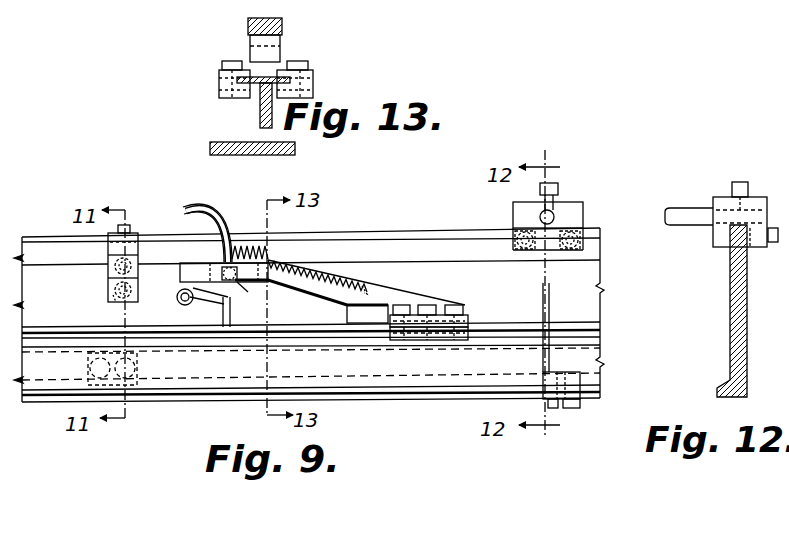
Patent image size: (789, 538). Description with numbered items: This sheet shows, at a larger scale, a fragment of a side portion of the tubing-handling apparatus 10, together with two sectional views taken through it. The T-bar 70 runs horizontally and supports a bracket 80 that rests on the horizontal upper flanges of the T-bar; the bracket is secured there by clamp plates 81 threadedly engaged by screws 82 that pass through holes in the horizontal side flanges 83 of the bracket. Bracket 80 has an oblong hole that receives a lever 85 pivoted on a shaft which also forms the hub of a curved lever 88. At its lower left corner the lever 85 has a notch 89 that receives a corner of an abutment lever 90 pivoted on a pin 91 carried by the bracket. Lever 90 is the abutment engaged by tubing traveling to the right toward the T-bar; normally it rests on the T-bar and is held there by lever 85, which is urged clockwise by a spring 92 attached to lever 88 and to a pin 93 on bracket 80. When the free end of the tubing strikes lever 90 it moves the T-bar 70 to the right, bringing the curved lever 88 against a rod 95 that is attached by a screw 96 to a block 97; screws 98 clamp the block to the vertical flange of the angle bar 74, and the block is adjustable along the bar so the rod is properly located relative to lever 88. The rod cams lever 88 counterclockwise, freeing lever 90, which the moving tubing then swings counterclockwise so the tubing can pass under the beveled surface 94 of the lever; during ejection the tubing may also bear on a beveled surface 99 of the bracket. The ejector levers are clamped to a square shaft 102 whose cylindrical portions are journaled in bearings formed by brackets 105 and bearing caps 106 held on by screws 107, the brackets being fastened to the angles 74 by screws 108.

In FIG. 9, the gate assembly 10 is at (389, 213).
In FIG. 13, the T-bar 70 is at (261, 117).
In FIG. 9, the T-bar 70 is at (540, 323).
In FIG. 13, the angle bar 74 is at (213, 144).
In FIG. 12, the angle bar 74 is at (744, 323).
In FIG. 13, the bracket 80 is at (249, 23).
In FIG. 9, the bracket 80 is at (411, 294).
In FIG. 13, the clamp plates 81 is at (223, 90).
In FIG. 9, the clamp plates 81 is at (443, 340).
In FIG. 13, the screws 82 is at (300, 63).
In FIG. 9, the screws 82 is at (451, 307).
In FIG. 13, the horizontal side flanges 83 is at (219, 77).
In FIG. 9, the horizontal side flanges 83 is at (470, 320).
In FIG. 9, the lever 85 is at (237, 285).
In FIG. 9, the curved lever 88 is at (218, 211).
In FIG. 9, the notch 89 is at (240, 293).
In FIG. 9, the abutment lever 90 is at (231, 313).
In FIG. 9, the pin 91 is at (181, 303).
In FIG. 9, the spring 92 is at (271, 257).
In FIG. 9, the pin 93 is at (367, 292).
In FIG. 9, the beveled surface 94 is at (228, 317).
In FIG. 9, the rod 95 is at (540, 217).
In FIG. 12, the rod 95 is at (688, 212).
In FIG. 12, the screw 96 is at (740, 182).
In FIG. 12, the block 97 is at (755, 200).
In FIG. 9, the screws 98 is at (513, 245).
In FIG. 12, the screws 98 is at (773, 245).
In FIG. 9, the beveled surface 99 is at (370, 317).
In FIG. 9, the square shaft 102 is at (56, 251).
In FIG. 9, the brackets 105 is at (112, 292).
In FIG. 9, the bearing caps 106 is at (138, 235).
In FIG. 9, the screws 107 is at (118, 229).
In FIG. 9, the screws 108 is at (112, 303).